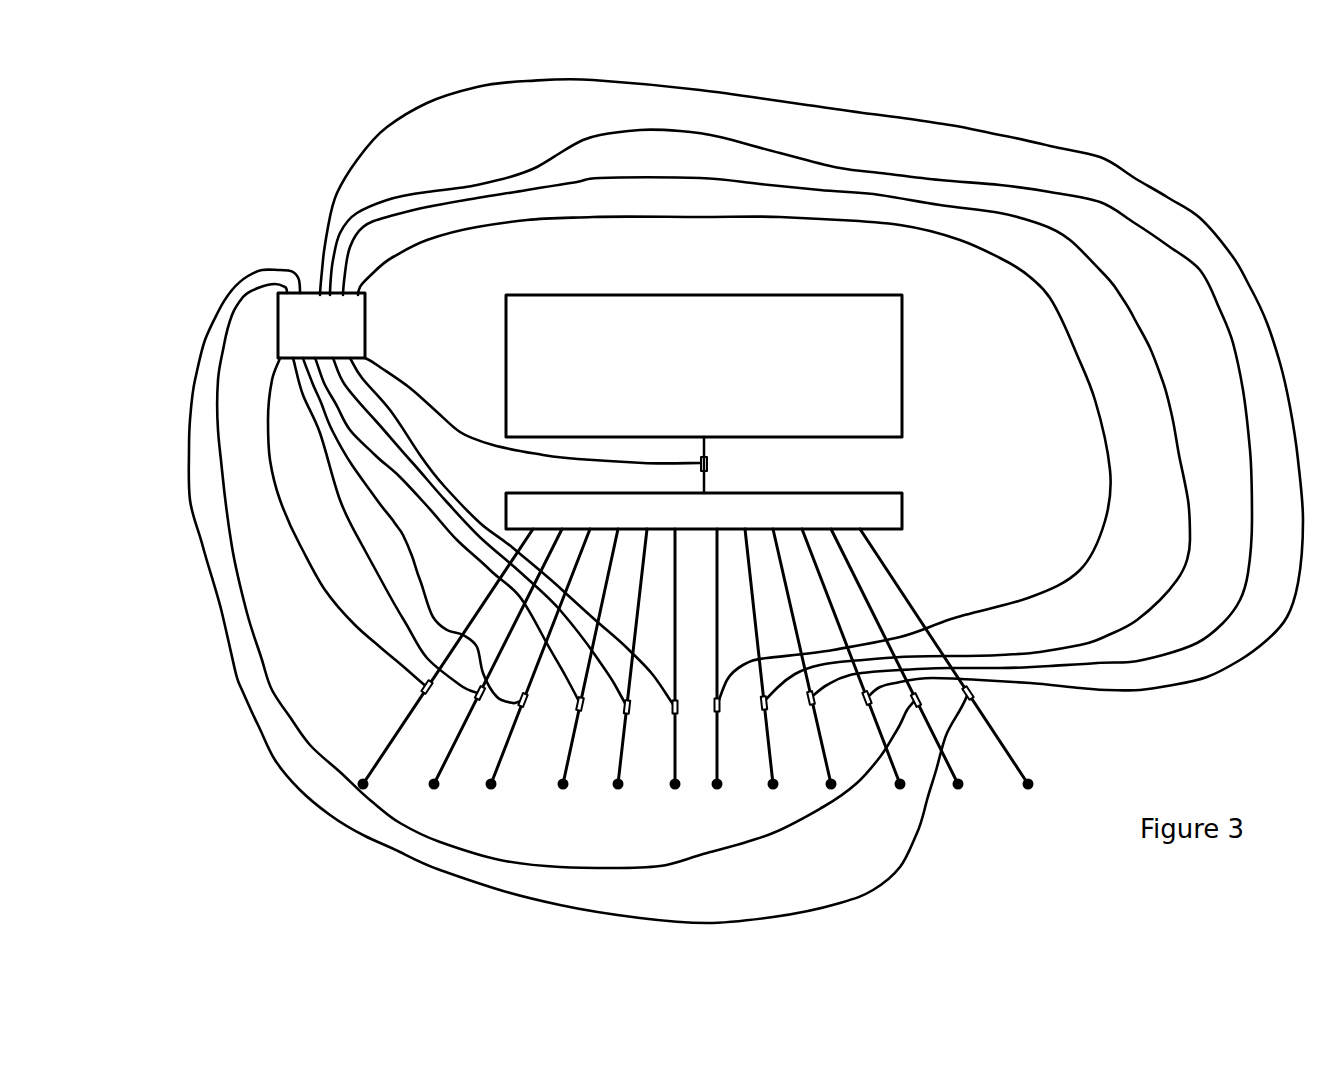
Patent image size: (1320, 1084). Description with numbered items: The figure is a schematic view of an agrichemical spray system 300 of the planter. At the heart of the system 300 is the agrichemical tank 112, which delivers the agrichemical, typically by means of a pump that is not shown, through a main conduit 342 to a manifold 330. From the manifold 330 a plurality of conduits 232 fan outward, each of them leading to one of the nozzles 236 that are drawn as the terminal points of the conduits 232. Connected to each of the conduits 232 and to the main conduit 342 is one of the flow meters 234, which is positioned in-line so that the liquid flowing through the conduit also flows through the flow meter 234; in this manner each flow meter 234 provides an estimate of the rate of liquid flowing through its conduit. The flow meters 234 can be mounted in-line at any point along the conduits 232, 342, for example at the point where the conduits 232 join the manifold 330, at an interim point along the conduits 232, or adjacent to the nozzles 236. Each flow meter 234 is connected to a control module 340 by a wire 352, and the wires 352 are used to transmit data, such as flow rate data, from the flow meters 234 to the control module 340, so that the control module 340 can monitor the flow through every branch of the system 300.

The agrichemical spray system 300 is at (232, 163).
The control module 340 is at (321, 325).
The agrichemical tank 112 is at (704, 366).
The manifold 330 is at (704, 511).
The main conduit 342 is at (706, 450).
The flow meter 234 is at (699, 464).
The conduit 232 is at (857, 577).
The wire 352 is at (219, 449).
The nozzle 236 is at (960, 786).